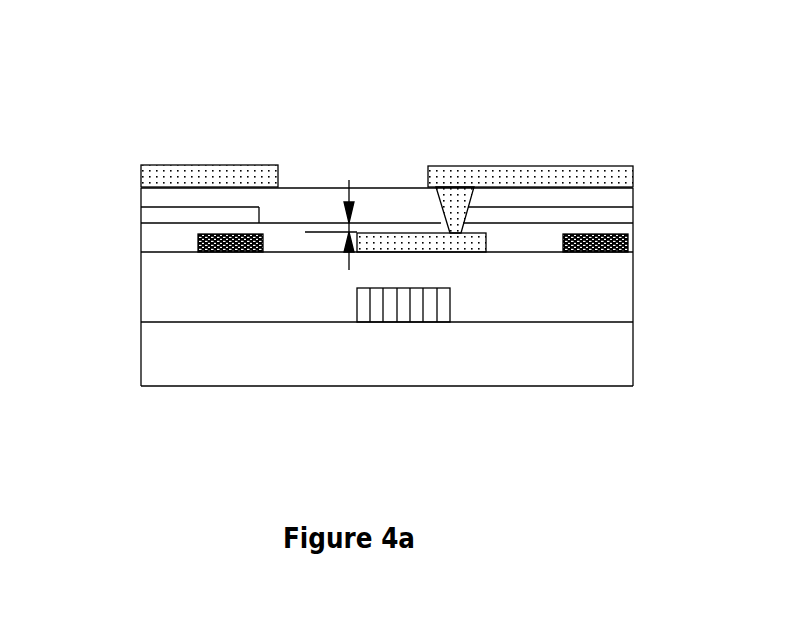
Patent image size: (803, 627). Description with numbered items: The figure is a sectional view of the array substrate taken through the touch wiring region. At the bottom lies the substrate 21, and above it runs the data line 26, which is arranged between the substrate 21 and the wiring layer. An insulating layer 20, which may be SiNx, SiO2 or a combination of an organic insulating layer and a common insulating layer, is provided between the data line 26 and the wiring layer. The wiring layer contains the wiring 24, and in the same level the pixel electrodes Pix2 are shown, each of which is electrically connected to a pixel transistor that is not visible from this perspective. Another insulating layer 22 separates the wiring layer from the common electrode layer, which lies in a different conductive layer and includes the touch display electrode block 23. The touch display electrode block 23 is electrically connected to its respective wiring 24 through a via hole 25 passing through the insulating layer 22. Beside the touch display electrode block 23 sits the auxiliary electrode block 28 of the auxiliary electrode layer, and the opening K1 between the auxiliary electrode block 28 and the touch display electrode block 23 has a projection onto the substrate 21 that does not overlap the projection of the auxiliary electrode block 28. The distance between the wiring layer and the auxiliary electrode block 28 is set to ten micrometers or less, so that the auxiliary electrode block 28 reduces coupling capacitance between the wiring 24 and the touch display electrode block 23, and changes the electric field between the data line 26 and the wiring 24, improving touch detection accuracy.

The insulating layer 20 is at (545, 262).
The substrate 21 is at (373, 368).
The insulating layer 22 is at (168, 199).
The touch display electrode block 23 is at (183, 178).
The wiring 24 is at (392, 247).
The via hole 25 is at (463, 222).
The data line 26 is at (412, 295).
The auxiliary electrode block 28 is at (552, 213).
The pixel electrode Pix2 is at (249, 236).
The opening K1 is at (353, 173).